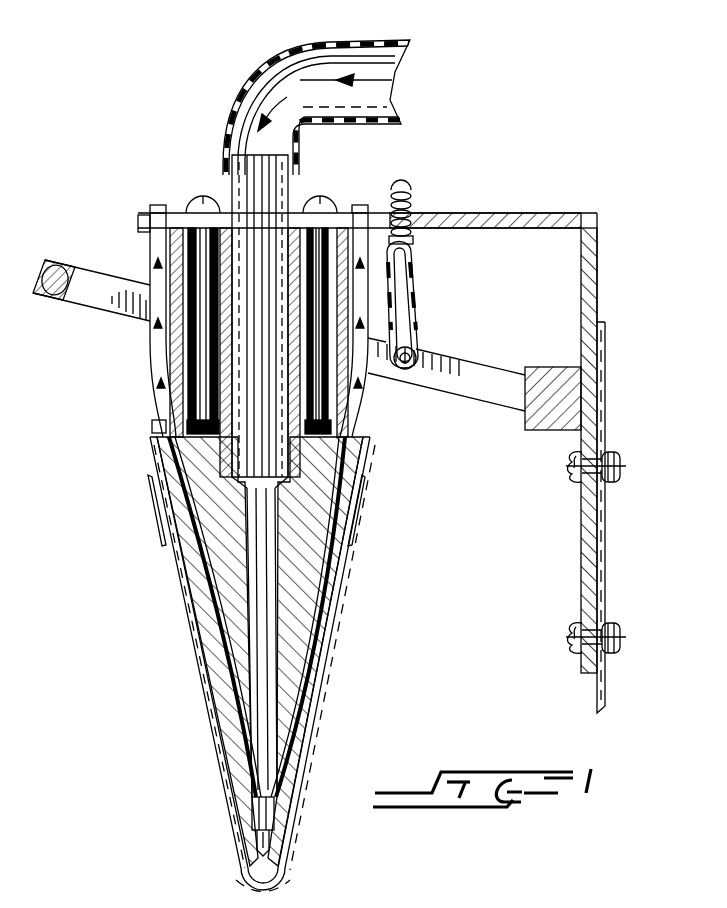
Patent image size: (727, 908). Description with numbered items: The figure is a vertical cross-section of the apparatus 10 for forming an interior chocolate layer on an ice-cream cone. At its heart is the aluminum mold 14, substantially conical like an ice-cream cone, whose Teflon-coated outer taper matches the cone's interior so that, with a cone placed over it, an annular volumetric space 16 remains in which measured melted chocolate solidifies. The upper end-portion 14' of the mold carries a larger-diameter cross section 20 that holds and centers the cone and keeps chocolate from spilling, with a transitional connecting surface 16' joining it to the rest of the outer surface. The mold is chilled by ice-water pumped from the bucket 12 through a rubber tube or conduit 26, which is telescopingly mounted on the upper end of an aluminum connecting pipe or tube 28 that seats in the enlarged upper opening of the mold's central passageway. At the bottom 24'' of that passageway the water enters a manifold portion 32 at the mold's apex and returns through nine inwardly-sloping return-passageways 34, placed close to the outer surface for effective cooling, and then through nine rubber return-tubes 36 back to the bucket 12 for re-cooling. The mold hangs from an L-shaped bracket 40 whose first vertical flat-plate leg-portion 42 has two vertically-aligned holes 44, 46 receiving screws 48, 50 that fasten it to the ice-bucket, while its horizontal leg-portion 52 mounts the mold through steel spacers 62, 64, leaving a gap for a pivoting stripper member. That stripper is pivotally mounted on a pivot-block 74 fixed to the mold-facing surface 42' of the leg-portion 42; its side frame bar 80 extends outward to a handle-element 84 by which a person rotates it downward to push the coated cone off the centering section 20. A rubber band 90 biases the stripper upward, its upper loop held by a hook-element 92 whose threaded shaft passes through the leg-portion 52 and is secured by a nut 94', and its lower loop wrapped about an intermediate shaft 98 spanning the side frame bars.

The apparatus 10 is at (550, 205).
The bucket 12 is at (606, 597).
The mold 14 is at (127, 613).
The upper end-portion of the mold 14' is at (230, 643).
The annular volumetric space 16 is at (268, 663).
The transitional connecting surface 16' is at (239, 668).
The larger-diameter cross section 20 is at (166, 500).
The bottom of the central passageway 24'' is at (308, 642).
The rubber tube or conduit 26 is at (236, 98).
The connecting cylindrical pipe or tube 28 is at (233, 186).
The manifold portion 32 is at (268, 766).
The return-passageways 34 is at (322, 607).
The rubber return-tubes 36 is at (150, 258).
The bracket 40 is at (603, 264).
The first vertical flat-plate leg-portion 42 is at (614, 443).
The mold-facing surface 42' is at (559, 257).
The hole 44 is at (608, 451).
The hole 46 is at (612, 628).
The screw 48 is at (572, 459).
The screw 50 is at (572, 630).
The second flat-plate horizontal leg-portion 52 is at (512, 213).
The steel spacer 62 is at (172, 212).
The steel spacer 64 is at (298, 213).
The pivot-block 74 is at (555, 367).
The side frame bar 80 is at (490, 383).
The handle-element 84 is at (76, 296).
The rubber band 90 is at (416, 300).
The hook-element 92 is at (417, 213).
The nut 94' is at (409, 187).
The intermediate shaft 98 is at (417, 352).